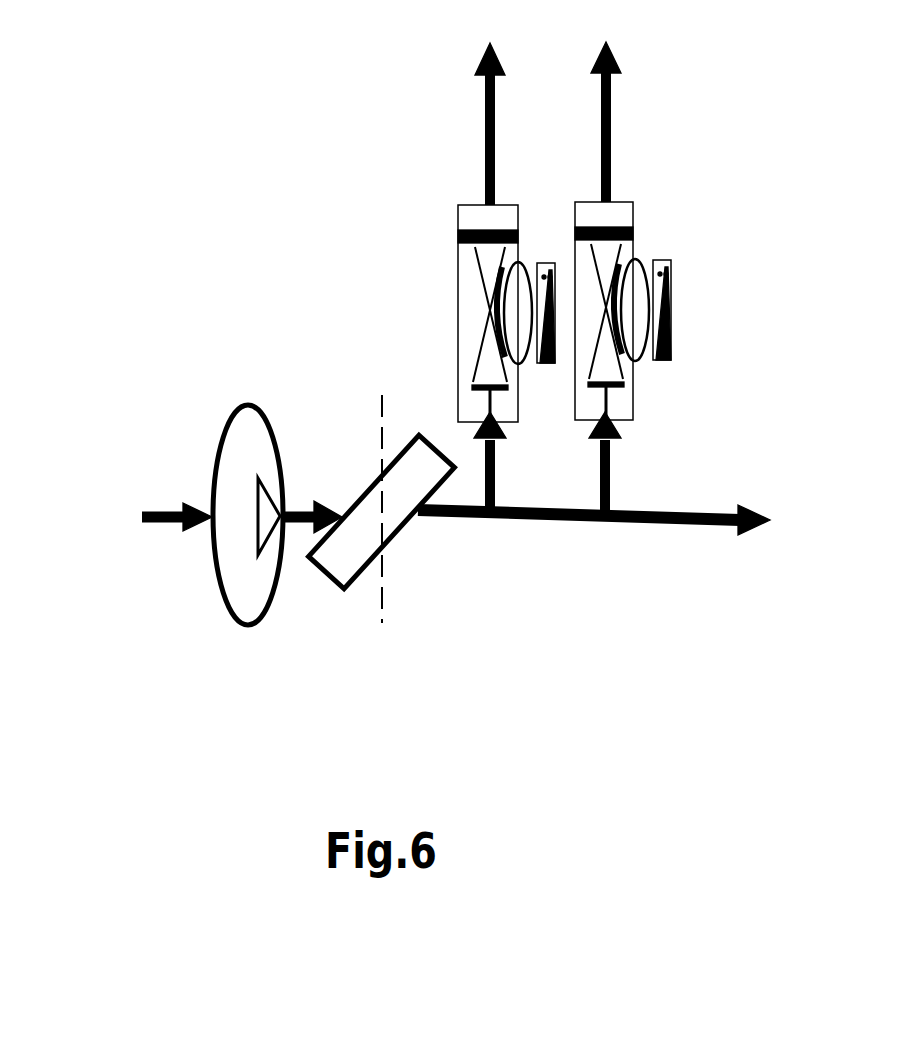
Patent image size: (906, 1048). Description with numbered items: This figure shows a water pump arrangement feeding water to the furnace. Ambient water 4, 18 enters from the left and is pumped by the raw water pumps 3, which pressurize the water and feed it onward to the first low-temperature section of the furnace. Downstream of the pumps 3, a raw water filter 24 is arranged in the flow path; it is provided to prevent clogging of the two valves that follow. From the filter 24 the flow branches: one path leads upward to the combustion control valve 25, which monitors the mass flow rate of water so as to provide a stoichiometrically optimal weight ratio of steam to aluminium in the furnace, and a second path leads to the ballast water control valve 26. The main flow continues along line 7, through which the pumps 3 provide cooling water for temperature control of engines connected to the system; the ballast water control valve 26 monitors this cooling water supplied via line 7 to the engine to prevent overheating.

The raw water pump 3 is at (246, 398).
The ambient water 4 is at (122, 517).
The ambient water 18 is at (122, 517).
The line 7 is at (604, 512).
The raw water filter 24 is at (382, 524).
The combustion control valve 25 is at (506, 267).
The ballast water control valve 26 is at (623, 260).